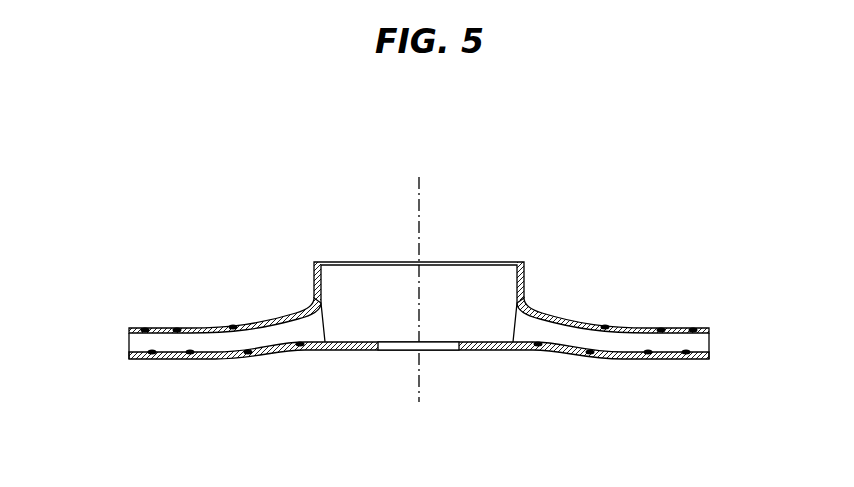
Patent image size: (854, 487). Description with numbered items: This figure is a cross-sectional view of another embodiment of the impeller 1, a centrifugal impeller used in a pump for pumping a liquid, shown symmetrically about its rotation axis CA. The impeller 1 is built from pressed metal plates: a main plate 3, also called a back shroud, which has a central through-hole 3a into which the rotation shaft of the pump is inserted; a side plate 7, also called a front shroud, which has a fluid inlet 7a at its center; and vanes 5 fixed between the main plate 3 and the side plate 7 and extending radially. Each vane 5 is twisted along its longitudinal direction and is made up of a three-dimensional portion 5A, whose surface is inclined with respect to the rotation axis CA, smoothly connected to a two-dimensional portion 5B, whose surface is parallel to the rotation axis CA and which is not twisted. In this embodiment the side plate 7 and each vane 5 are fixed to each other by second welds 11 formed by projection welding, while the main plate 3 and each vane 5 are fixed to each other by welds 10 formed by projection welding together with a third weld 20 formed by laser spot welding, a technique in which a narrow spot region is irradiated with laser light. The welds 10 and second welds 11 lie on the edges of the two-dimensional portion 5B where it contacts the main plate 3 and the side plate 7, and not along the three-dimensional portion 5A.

The impeller 1 is at (278, 232).
The rotation axis CA is at (420, 277).
The main plate 3 is at (352, 353).
The through-hole 3a is at (427, 351).
The vane 5 is at (331, 320).
The three-dimensional portion 5A is at (302, 323).
The two-dimensional portion 5B is at (134, 347).
The side plate 7 is at (638, 325).
The fluid inlet 7a is at (503, 262).
The first weld 10 is at (151, 358).
The second weld 11 is at (145, 329).
The third weld 20 is at (300, 351).